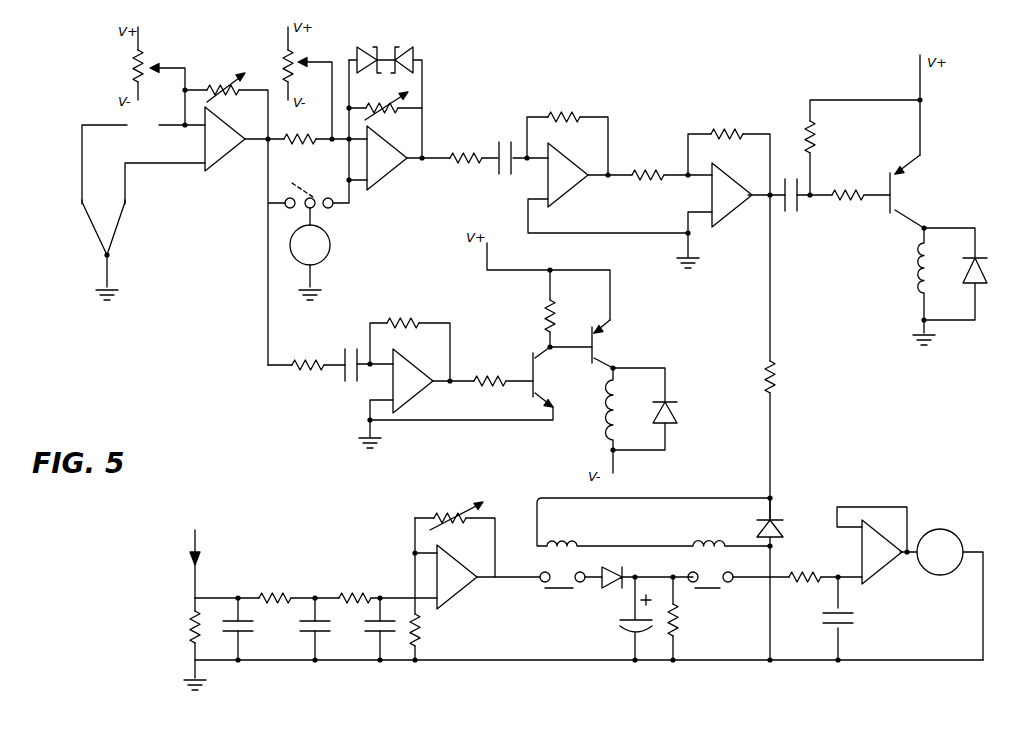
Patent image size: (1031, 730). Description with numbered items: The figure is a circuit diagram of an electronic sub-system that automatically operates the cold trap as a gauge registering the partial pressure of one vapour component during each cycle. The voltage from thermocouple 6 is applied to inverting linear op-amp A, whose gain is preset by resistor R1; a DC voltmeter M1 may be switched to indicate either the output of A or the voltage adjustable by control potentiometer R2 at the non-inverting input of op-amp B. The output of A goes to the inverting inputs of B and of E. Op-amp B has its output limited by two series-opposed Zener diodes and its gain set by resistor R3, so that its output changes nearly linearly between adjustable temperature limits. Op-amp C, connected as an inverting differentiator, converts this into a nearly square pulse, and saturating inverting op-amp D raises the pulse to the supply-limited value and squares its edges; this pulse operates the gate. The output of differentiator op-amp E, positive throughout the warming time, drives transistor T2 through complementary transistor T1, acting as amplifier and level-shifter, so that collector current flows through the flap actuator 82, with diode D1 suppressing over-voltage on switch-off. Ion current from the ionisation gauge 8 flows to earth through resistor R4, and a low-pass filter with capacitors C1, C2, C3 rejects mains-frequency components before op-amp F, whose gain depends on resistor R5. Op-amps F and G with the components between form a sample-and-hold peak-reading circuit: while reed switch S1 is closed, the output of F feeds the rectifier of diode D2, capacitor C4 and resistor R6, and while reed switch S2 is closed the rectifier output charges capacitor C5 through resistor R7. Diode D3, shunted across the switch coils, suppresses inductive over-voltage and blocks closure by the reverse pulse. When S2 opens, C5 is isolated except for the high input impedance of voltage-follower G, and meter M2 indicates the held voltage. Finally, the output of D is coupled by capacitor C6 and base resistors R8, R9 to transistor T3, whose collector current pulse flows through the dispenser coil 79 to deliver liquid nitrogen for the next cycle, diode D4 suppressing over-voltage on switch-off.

The thermocouple 6 is at (102, 234).
The ionisation gauge 8 is at (200, 564).
The dispenser coil 79 is at (904, 274).
The flap actuator 82 is at (593, 409).
The inverting linear operational amplifier A is at (225, 139).
The op-amp B is at (387, 158).
The inverting differentiator op-amp C is at (568, 175).
The saturating inverting op-amp D is at (732, 195).
The differentiator op-amp E is at (413, 381).
The op-amp F is at (457, 577).
The op-amp G is at (882, 552).
The resistor R1 is at (226, 106).
The control potentiometer R2 is at (295, 83).
The resistor R3 is at (385, 113).
The resistor R4 is at (182, 638).
The resistor R5 is at (455, 532).
The resistor R6 is at (686, 618).
The resistor R7 is at (797, 564).
The base resistor R8 is at (862, 147).
The base resistor R9 is at (850, 207).
The capacitor C1 is at (233, 629).
The capacitor C2 is at (310, 629).
The capacitor C3 is at (377, 629).
The capacitor C4 is at (624, 618).
The capacitor C5 is at (850, 618).
The coupling capacitor C6 is at (794, 209).
The diode D1 is at (645, 409).
The diode D2 is at (618, 570).
The diode D3 is at (781, 579).
The diode D4 is at (967, 274).
The complementary transistor T1 is at (462, 383).
The transistor T2 is at (604, 344).
The transistor T3 is at (915, 191).
The solenoid-actuated vacuum reed switch S1 is at (555, 590).
The solenoid-actuated vacuum reed switch S2 is at (720, 590).
The DC voltmeter M1 is at (321, 254).
The meter M2 is at (954, 592).